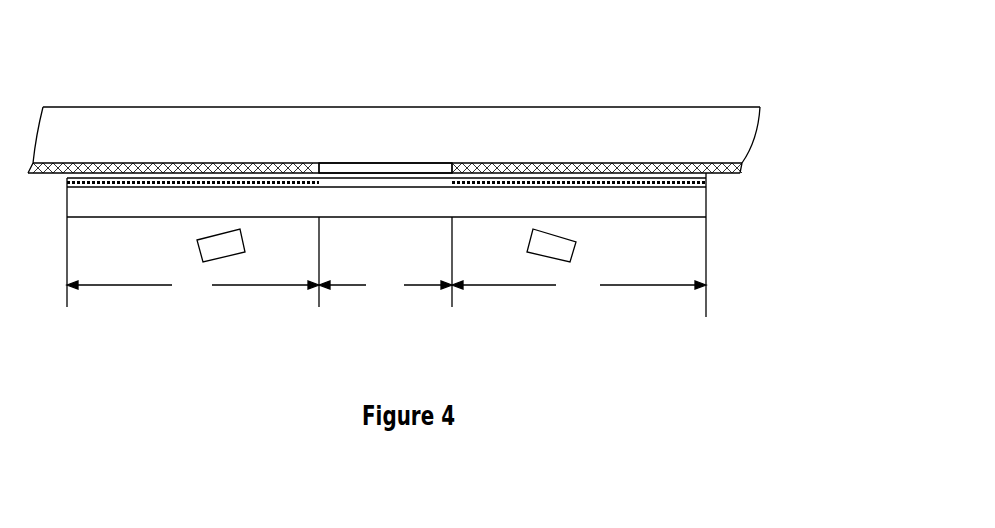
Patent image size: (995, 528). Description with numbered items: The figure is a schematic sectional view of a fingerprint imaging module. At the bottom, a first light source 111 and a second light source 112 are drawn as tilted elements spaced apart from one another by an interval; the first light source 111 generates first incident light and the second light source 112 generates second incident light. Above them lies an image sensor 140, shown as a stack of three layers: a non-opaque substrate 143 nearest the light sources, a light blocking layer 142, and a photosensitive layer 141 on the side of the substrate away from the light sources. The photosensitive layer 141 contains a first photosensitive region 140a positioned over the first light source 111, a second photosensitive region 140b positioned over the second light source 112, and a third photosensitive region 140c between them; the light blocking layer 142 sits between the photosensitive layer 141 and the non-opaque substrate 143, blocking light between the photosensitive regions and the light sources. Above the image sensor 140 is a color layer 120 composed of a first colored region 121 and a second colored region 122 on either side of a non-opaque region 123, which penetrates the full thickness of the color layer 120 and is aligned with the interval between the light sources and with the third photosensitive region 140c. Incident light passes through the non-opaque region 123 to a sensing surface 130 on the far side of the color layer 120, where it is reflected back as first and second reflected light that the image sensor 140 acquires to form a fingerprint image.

The first light source 111 is at (222, 245).
The second light source 112 is at (552, 246).
The color layer 120 is at (387, 89).
The first colored region 121 is at (233, 163).
The second colored region 122 is at (564, 112).
The non-opaque region 123 is at (377, 163).
The sensing surface 130 is at (528, 107).
The image sensor 140 is at (808, 140).
The first photosensitive region 140a is at (193, 285).
The second photosensitive region 140b is at (579, 285).
The third photosensitive region 140c is at (385, 285).
The photosensitive layer 141 is at (610, 178).
The light blocking layer 142 is at (617, 185).
The non-opaque substrate 143 is at (612, 205).